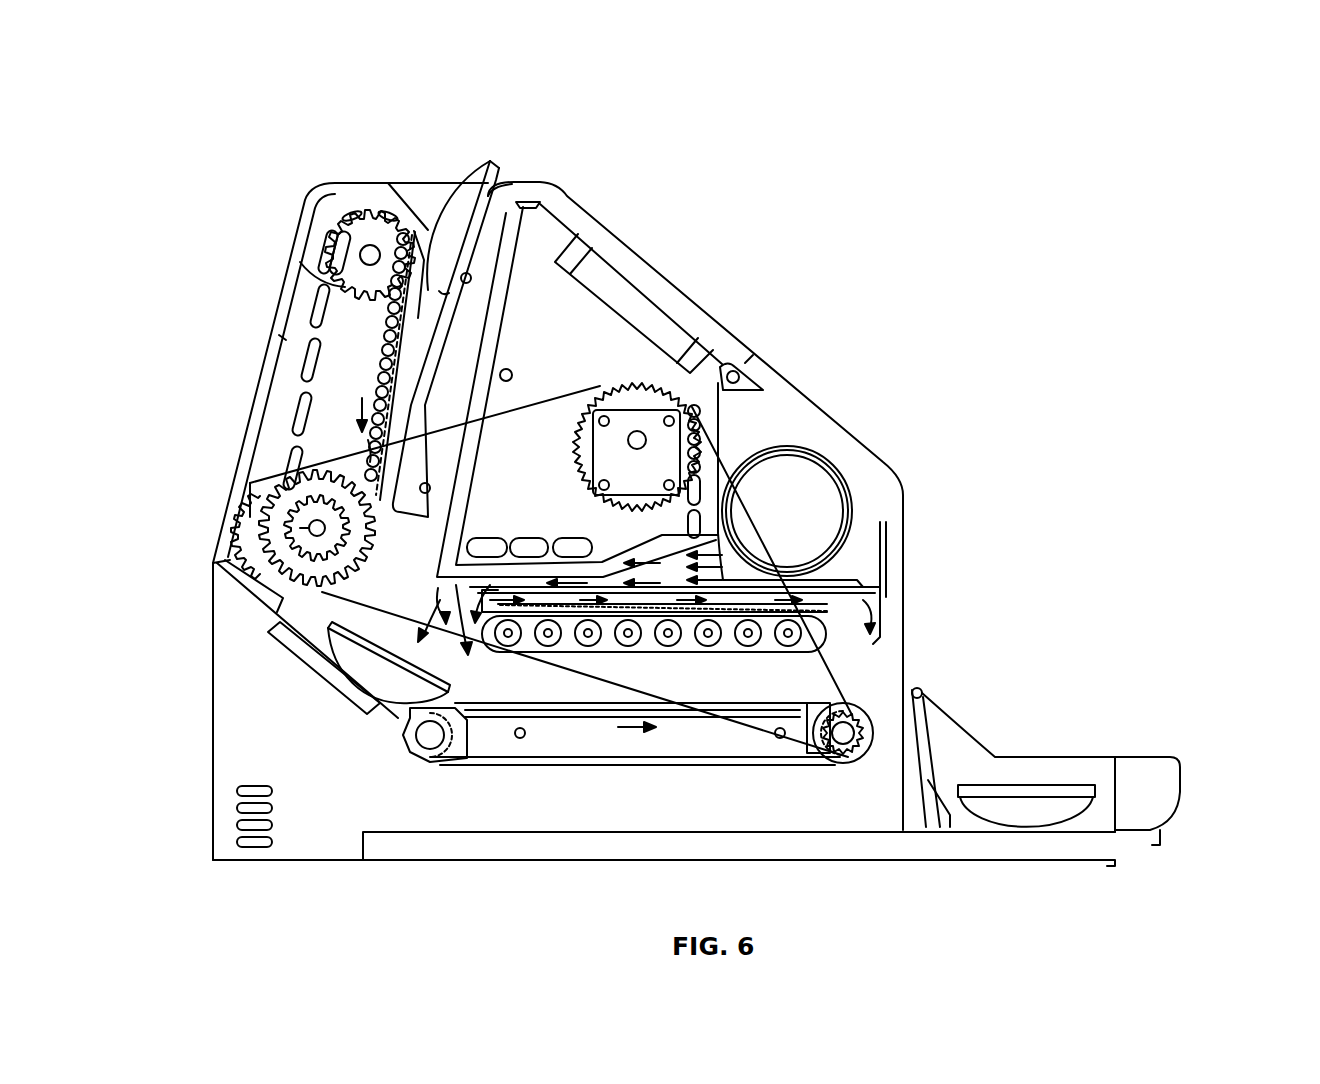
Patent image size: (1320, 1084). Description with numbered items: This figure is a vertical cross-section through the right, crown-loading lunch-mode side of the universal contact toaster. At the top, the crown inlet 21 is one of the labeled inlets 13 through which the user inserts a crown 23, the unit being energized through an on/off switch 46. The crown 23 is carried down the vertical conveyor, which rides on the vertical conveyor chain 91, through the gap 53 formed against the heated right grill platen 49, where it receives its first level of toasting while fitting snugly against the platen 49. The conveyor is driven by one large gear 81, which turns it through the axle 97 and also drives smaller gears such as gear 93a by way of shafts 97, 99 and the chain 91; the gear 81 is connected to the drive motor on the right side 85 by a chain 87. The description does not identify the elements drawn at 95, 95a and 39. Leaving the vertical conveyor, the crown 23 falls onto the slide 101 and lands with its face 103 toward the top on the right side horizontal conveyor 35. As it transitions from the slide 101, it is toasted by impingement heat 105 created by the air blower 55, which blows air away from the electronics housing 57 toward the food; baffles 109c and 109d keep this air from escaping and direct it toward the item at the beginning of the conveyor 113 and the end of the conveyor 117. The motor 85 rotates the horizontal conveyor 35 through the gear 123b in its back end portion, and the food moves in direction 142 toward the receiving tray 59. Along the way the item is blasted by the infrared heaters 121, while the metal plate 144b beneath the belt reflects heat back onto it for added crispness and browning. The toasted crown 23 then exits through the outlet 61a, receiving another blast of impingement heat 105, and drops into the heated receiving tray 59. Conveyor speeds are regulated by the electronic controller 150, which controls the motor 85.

The inlet 13 is at (447, 160).
The crown inlet 21 is at (412, 179).
The crown 23 is at (482, 148).
The on/off switch 46 is at (498, 166).
The face 103 is at (492, 193).
The electronics housing 57 is at (552, 226).
The electronic controller 150 is at (645, 305).
The right grill platen 49 is at (451, 351).
The upper sprocket 95 is at (362, 212).
The shaft 99 is at (338, 235).
The sprocket guard 95a is at (300, 262).
The slots 39 is at (338, 318).
The gap 53 is at (384, 372).
The vertical conveyor chain 91 is at (373, 392).
The chain 87 is at (368, 450).
The large gear 81 is at (258, 475).
The axle 97 is at (282, 490).
The smaller gear 93a is at (288, 518).
The baffle 109c is at (440, 600).
The impingement heat 105 is at (433, 615).
The slide 101 is at (315, 668).
The drive motor on the right side 85 is at (697, 413).
The air blower 55 is at (833, 460).
The baffle 109d is at (888, 607).
The infrared heaters 121 is at (668, 652).
The direction 142 is at (623, 717).
The metal plate 144b is at (608, 722).
The right side horizontal conveyor 35 is at (622, 766).
The beginning of the horizontal conveyor 113 is at (490, 718).
The gear 123b is at (842, 765).
The end of the conveyor 117 is at (870, 758).
The outlet 61a is at (924, 695).
The receiving tray 59 is at (1180, 780).